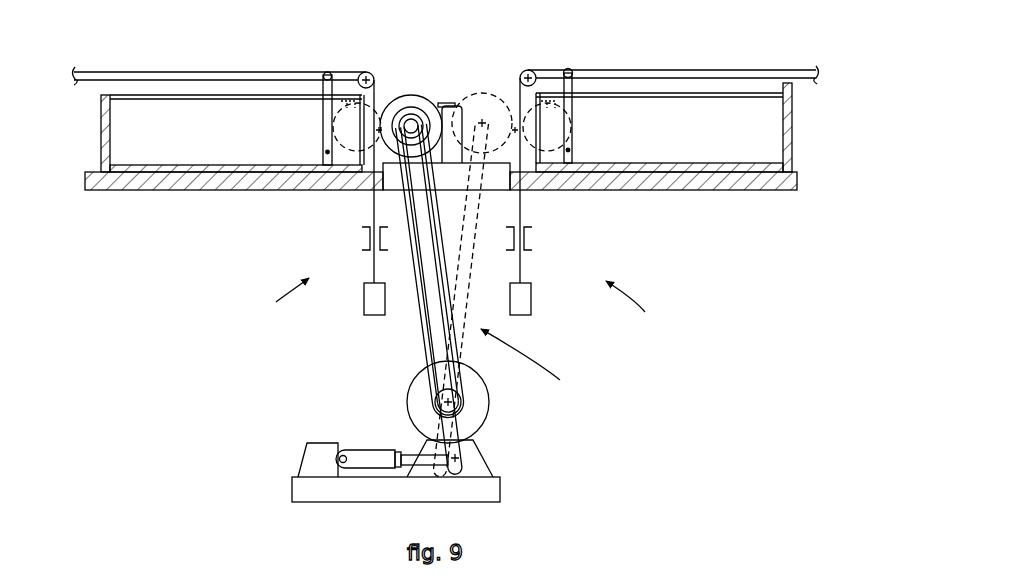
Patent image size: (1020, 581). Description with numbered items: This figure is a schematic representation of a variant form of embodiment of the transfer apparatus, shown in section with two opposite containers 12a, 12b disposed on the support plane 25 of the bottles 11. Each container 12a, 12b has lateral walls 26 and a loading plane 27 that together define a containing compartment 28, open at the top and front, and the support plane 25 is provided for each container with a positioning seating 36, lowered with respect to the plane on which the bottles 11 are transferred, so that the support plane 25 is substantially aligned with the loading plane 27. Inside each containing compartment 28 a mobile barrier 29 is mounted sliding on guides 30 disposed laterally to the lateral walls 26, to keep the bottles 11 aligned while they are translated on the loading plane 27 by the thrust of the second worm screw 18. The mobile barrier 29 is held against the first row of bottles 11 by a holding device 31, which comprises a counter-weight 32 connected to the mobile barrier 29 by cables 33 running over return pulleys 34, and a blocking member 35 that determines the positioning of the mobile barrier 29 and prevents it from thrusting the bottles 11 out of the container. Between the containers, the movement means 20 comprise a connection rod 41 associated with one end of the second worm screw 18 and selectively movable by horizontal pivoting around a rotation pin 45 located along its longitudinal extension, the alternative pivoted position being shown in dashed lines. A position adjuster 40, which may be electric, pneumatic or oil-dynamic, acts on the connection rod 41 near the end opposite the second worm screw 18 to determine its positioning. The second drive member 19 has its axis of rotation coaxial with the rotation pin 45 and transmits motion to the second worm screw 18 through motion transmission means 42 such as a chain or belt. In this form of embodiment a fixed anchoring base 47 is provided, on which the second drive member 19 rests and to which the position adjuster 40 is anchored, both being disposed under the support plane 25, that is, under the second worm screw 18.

The bottles 11 is at (449, 118).
The first container 12a is at (422, 127).
The second container 12b is at (798, 147).
The second worm screw 18 is at (411, 103).
The second drive member 19 is at (475, 405).
The movement means 20 is at (531, 366).
The support plane 25 is at (484, 165).
The lateral walls 26 is at (106, 152).
The loading plane 27 is at (222, 168).
The containing compartment 28 is at (110, 106).
The mobile barrier 29 is at (327, 156).
The guides 30 is at (240, 77).
The holding device 31 is at (453, 307).
The counter-weight 32 is at (375, 300).
The cables 33 is at (374, 268).
The return pulleys 34 is at (365, 79).
The blocking member 35 is at (369, 241).
The positioning seating 36 is at (168, 173).
The position adjuster 40 is at (364, 459).
The connection rod 41 is at (437, 308).
The motion transmission means 42 is at (425, 351).
The rotation pin 45 is at (456, 393).
The fixed anchoring base 47 is at (315, 487).